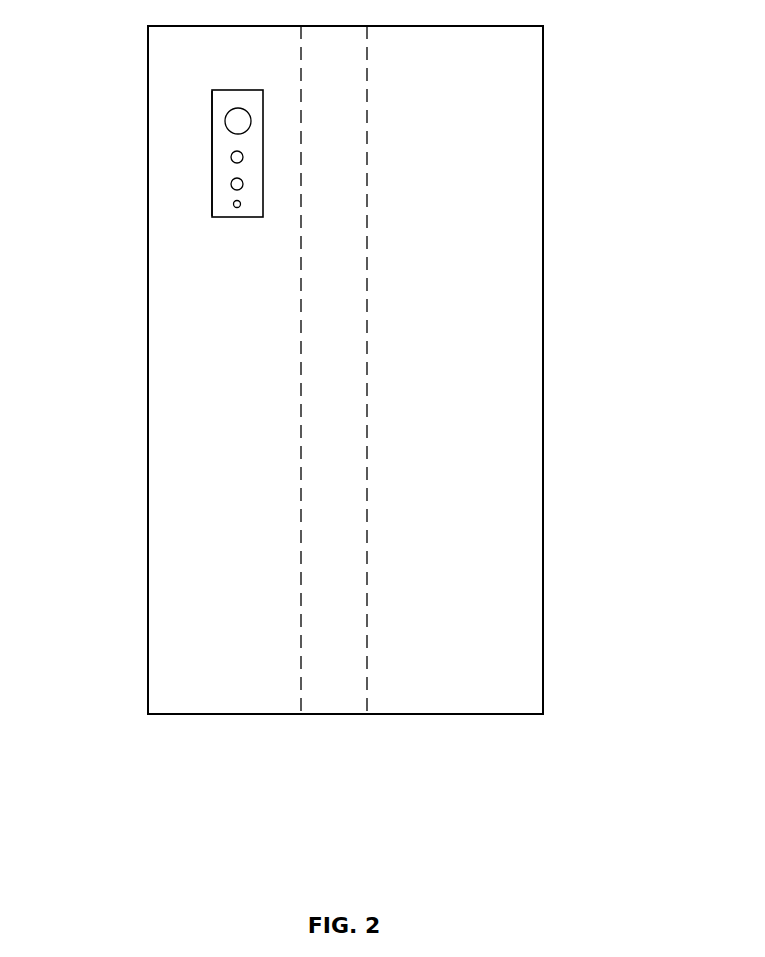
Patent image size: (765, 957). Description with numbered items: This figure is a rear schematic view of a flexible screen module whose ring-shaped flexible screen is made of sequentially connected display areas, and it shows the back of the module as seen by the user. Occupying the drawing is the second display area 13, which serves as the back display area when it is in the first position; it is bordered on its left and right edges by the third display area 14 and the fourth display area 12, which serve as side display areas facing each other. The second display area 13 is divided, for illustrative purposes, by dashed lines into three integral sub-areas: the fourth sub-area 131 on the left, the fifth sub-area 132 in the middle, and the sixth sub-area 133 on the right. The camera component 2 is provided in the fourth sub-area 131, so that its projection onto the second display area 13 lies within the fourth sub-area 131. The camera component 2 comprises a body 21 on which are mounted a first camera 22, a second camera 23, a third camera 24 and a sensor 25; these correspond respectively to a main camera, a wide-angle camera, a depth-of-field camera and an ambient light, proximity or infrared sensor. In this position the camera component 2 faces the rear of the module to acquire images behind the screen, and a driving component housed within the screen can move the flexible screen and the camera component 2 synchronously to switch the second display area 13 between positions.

The camera component 2 is at (75, 83).
The body 21 is at (212, 100).
The first camera 22 is at (225, 123).
The second camera 23 is at (231, 158).
The third camera 24 is at (231, 185).
The sensor 25 is at (233, 205).
The fourth display area 12 is at (543, 373).
The second display area 13 is at (480, 785).
The fourth sub-area 131 is at (233, 692).
The fifth sub-area 132 is at (335, 692).
The sixth sub-area 133 is at (457, 692).
The third display area 14 is at (148, 378).